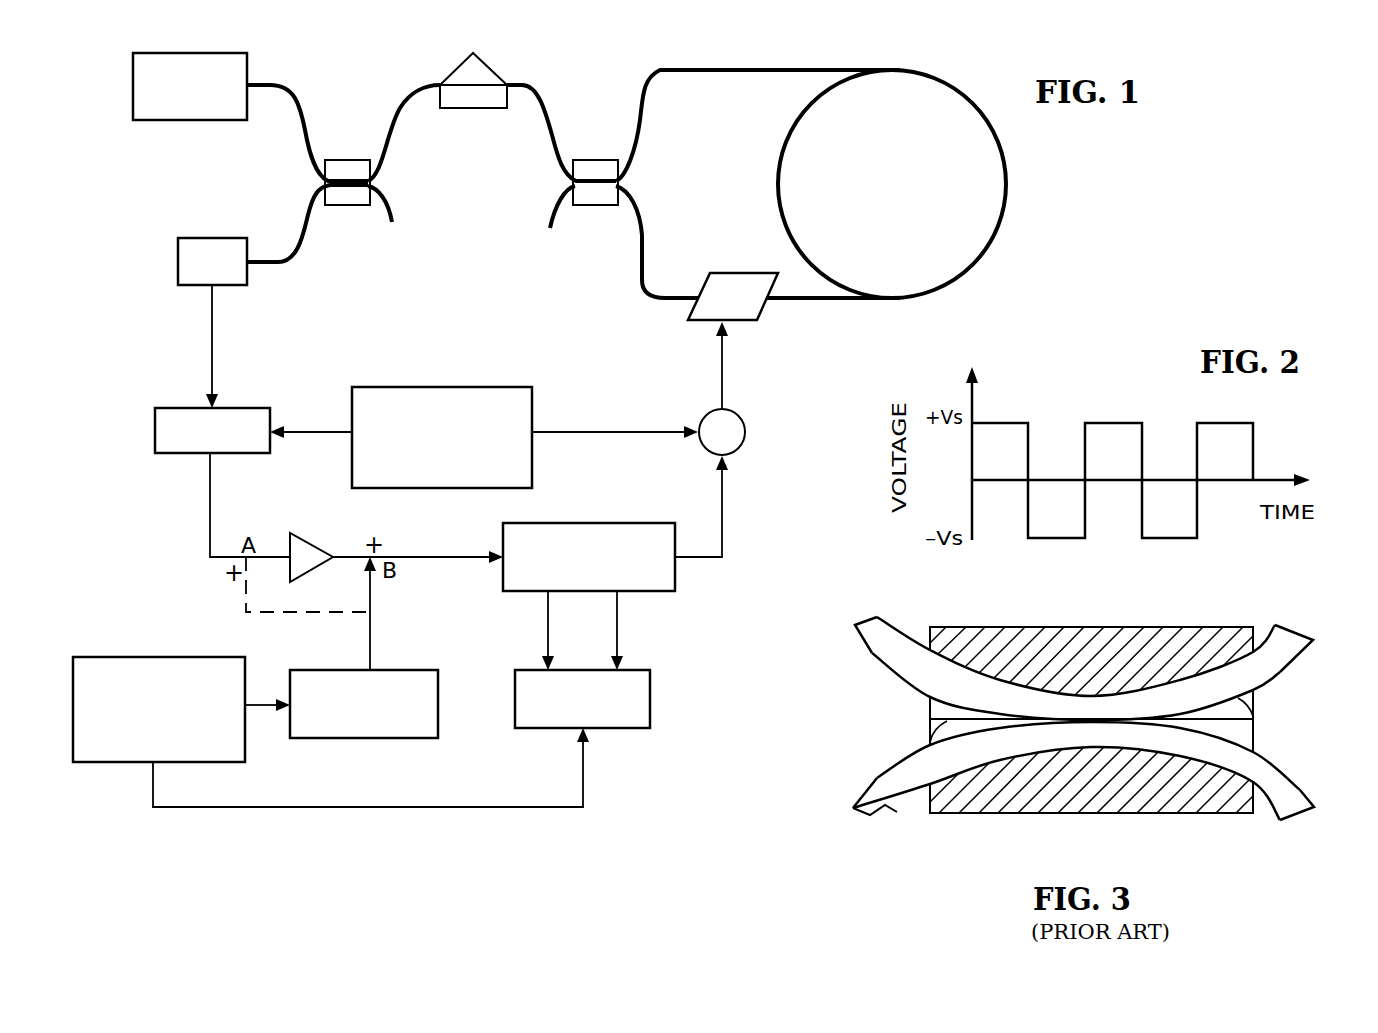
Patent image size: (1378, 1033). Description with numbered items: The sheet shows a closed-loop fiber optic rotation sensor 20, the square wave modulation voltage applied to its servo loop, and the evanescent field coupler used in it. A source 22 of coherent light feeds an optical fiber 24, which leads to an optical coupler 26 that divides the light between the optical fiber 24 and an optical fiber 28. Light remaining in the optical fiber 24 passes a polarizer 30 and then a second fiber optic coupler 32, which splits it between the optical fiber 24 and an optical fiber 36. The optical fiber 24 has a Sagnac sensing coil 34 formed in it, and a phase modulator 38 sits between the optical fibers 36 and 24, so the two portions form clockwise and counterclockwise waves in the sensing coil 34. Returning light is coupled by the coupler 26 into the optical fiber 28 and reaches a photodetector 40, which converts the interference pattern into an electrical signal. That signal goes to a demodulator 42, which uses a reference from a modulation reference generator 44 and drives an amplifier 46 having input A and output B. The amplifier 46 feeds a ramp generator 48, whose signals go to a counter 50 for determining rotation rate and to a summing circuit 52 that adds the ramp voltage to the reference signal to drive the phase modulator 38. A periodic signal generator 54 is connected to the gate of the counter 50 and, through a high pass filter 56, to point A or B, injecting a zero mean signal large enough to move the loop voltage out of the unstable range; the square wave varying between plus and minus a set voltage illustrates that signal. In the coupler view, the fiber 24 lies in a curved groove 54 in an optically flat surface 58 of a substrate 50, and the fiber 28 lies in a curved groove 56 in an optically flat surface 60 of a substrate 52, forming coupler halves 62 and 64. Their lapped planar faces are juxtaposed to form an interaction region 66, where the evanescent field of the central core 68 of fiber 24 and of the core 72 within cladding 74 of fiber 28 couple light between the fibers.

In FIG. 1, the fiber optic rotation sensor 20 is at (1142, 218).
In FIG. 1, the source 22 is at (150, 120).
In FIG. 1, the optical fiber 24 is at (262, 83).
In FIG. 3, the optical fiber 24 is at (862, 630).
In FIG. 1, the optical coupler 26 is at (348, 207).
In FIG. 1, the optical fiber 28 is at (297, 230).
In FIG. 3, the optical fiber 28 is at (872, 783).
In FIG. 1, the polarizer 30 is at (478, 108).
In FIG. 1, the second fiber optic coupler 32 is at (607, 207).
In FIG. 1, the Sagnac sensing coil 34 is at (1009, 190).
In FIG. 1, the optical fiber 36 is at (637, 250).
In FIG. 1, the phase modulator 38 is at (755, 272).
In FIG. 1, the photodetector 40 is at (225, 285).
In FIG. 1, the demodulator 42 is at (245, 453).
In FIG. 1, the modulation reference generator 44 is at (532, 440).
In FIG. 1, the amplifier 46 is at (318, 538).
In FIG. 1, the ramp generator 48 is at (603, 523).
In FIG. 1, the counter / substrate 50 is at (515, 705).
In FIG. 3, the counter / substrate 50 is at (1160, 627).
In FIG. 1, the summing circuit / substrate 52 is at (705, 412).
In FIG. 3, the summing circuit / substrate 52 is at (1165, 815).
In FIG. 1, the periodic signal generator / curved groove 54 is at (143, 657).
In FIG. 3, the periodic signal generator / curved groove 54 is at (1278, 660).
In FIG. 1, the high pass filter / curved groove 56 is at (392, 670).
In FIG. 3, the high pass filter / curved groove 56 is at (1258, 756).
In FIG. 3, the optically flat surface 58 is at (930, 742).
In FIG. 3, the optically flat surface 60 is at (1254, 714).
In FIG. 3, the coupler half 62 is at (1288, 878).
In FIG. 3, the coupler half 64 is at (964, 600).
In FIG. 3, the interaction region 66 is at (1079, 734).
In FIG. 3, the central core 68 is at (885, 655).
In FIG. 3, the core 72 is at (878, 812).
In FIG. 3, the cladding 74 is at (905, 800).